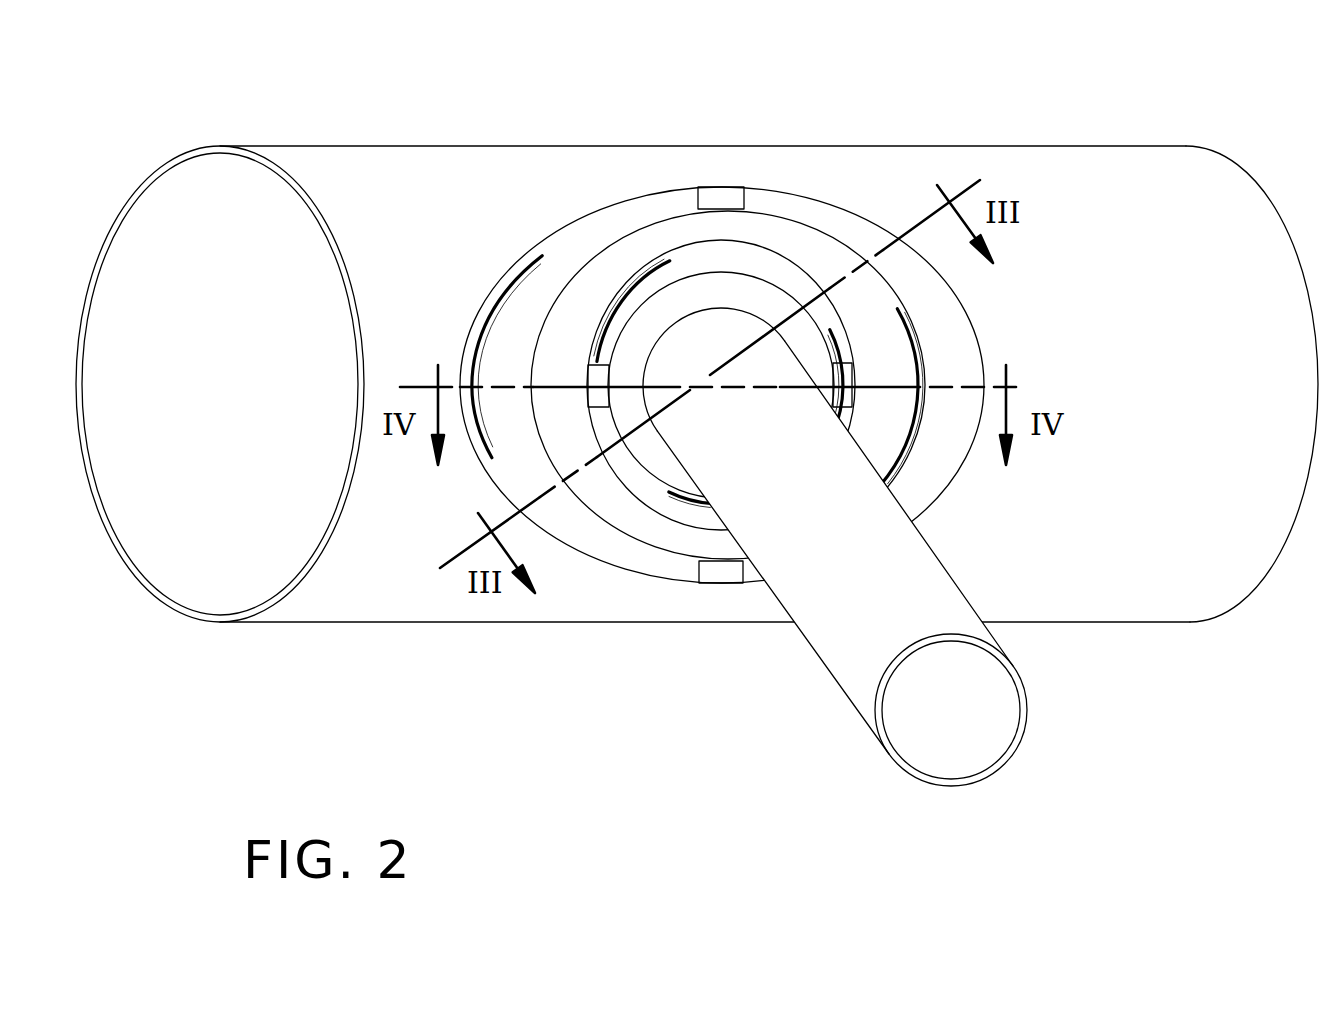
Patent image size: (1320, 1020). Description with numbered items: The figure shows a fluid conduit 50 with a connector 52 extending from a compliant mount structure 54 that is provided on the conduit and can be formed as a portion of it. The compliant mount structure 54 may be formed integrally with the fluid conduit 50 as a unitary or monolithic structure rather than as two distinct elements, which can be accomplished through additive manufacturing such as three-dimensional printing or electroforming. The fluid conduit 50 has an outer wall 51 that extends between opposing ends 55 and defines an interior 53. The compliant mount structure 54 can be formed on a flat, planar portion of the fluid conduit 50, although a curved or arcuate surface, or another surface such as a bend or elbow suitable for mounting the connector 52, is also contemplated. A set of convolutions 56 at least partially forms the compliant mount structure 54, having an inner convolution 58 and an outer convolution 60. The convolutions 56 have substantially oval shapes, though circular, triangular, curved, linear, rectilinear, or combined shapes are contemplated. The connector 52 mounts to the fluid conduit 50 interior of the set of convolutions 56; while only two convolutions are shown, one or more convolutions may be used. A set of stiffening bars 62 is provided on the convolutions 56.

The fluid conduit 50 is at (366, 637).
The outer wall 51 is at (243, 617).
The connector 52 is at (816, 660).
The interior 53 is at (178, 226).
The compliant mount structure 54 is at (566, 180).
The opposing ends 55 is at (296, 190).
The set of convolutions 56 is at (848, 200).
The inner convolution 58 is at (633, 495).
The outer convolution 60 is at (967, 315).
The set of stiffening bars 62 is at (706, 187).